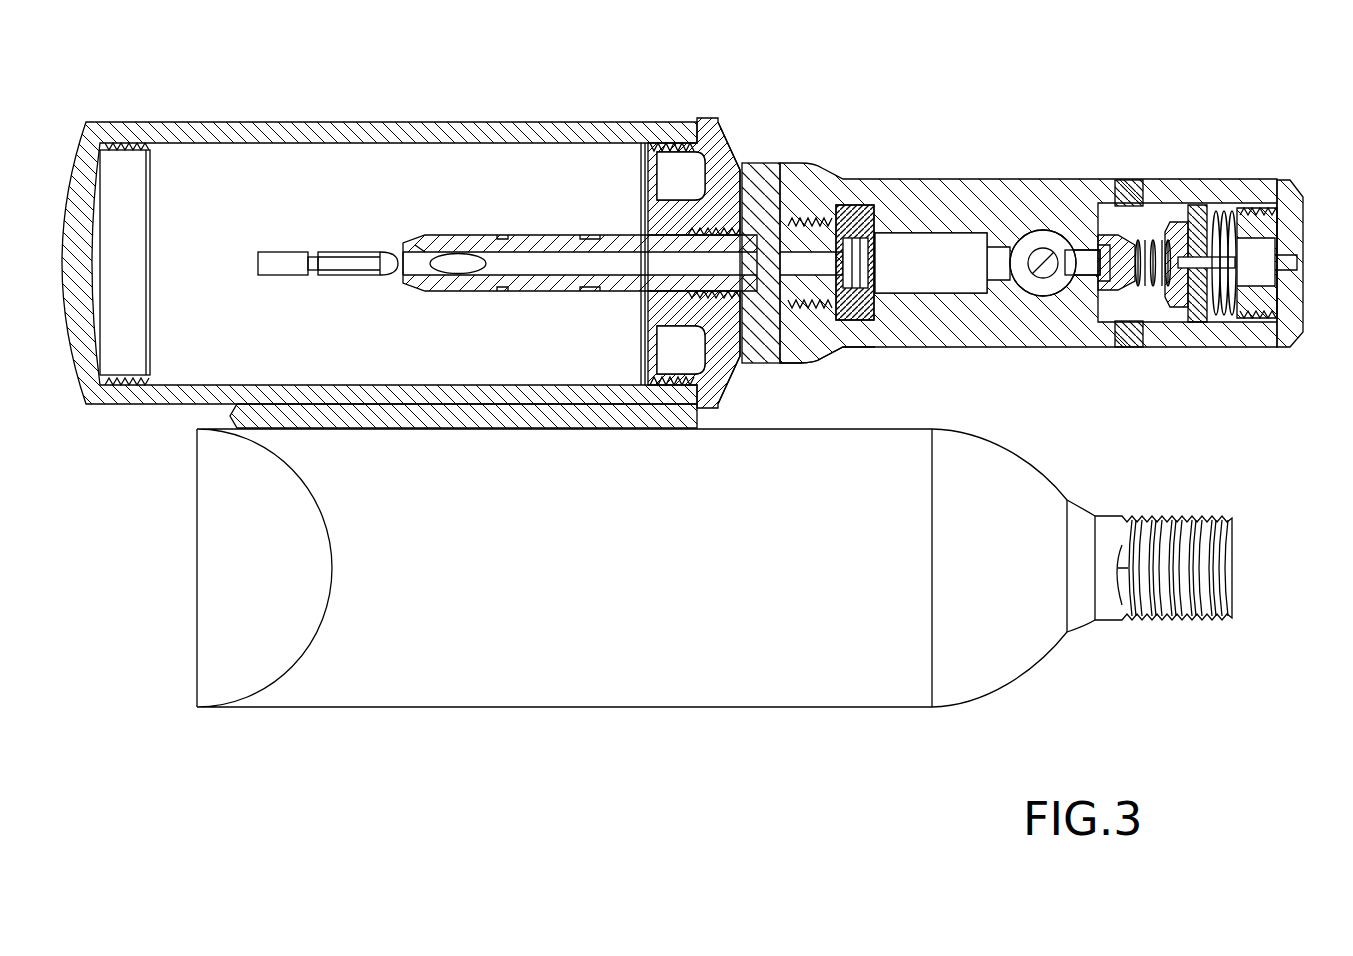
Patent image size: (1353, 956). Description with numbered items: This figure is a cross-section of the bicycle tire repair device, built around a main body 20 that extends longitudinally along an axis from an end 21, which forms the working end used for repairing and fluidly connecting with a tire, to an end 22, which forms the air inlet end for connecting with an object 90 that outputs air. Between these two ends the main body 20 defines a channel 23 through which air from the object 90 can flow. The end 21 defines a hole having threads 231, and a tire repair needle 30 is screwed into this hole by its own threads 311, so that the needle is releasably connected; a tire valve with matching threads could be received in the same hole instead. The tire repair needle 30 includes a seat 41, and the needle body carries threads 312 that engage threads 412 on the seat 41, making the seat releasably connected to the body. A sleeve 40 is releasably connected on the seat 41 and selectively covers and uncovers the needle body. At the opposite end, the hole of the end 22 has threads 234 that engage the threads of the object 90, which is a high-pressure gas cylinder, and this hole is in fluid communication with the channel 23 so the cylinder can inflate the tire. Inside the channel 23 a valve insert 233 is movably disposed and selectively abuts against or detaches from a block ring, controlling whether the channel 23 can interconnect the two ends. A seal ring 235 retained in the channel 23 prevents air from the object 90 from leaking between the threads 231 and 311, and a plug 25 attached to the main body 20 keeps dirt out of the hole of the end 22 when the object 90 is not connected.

The main body 20 is at (1016, 160).
The end 21 is at (782, 187).
The end 22 is at (1288, 192).
The channel 23 is at (952, 232).
The plug 25 is at (1283, 215).
The tire repair needle 30 is at (507, 263).
The sleeve 40 is at (320, 122).
The seat 41 is at (710, 145).
The object 90 is at (560, 707).
The threads 231 is at (835, 315).
The valve insert 233 is at (1100, 235).
The threads 234 is at (1273, 300).
The seal ring 235 is at (858, 212).
The threads 311 is at (825, 228).
The threads 312 is at (740, 170).
The threads 412 is at (684, 212).